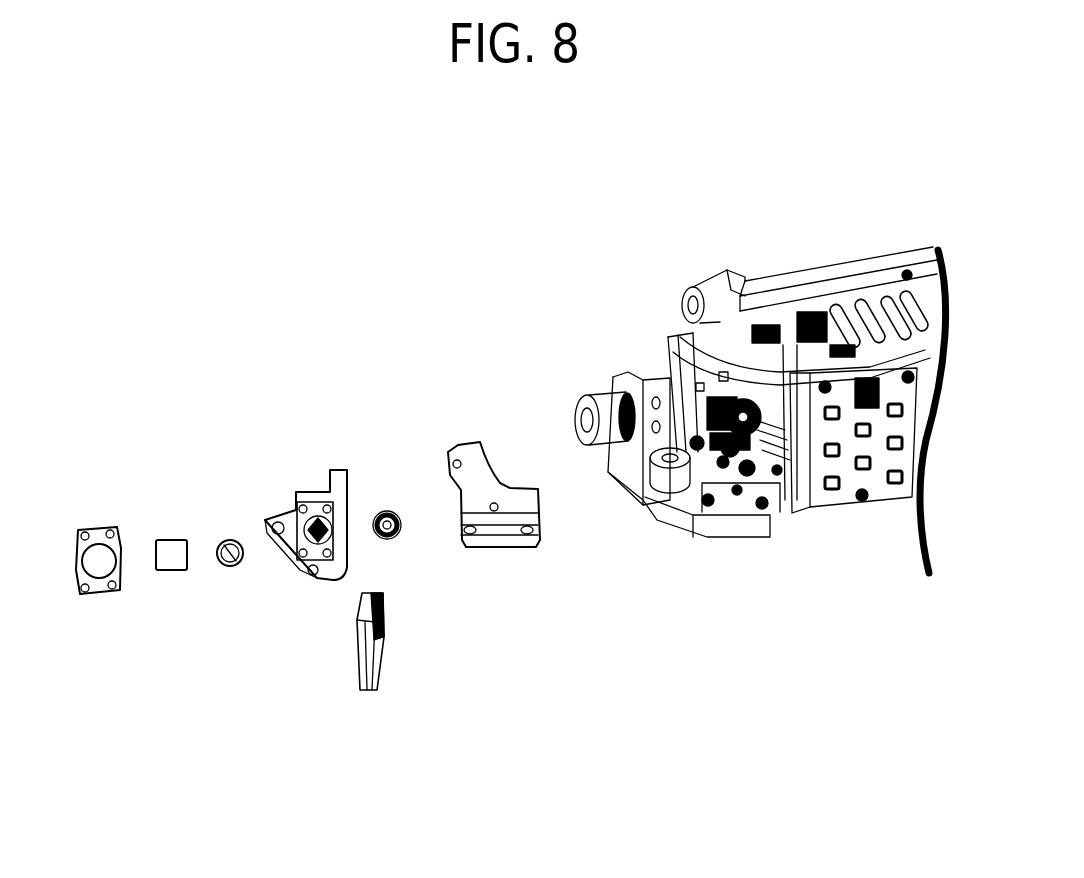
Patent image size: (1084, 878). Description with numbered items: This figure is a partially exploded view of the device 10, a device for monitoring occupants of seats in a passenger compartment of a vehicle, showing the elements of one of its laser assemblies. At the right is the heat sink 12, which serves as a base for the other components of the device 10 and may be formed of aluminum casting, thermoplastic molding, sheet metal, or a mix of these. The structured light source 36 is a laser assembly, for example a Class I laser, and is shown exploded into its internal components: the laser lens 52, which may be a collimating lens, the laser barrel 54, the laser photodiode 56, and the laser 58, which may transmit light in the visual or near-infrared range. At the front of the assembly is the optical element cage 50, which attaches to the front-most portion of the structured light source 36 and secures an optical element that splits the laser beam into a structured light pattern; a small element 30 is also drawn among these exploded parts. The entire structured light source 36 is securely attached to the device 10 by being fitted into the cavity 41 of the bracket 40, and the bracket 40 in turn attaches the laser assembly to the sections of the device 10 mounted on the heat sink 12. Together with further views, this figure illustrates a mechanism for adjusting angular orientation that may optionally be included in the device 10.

The device 10 is at (83, 243).
The heat sink 12 is at (798, 552).
The spacer 30 is at (173, 553).
The structured light source 36 is at (42, 483).
The bracket 40 is at (497, 530).
The cavity 41 is at (515, 470).
The optical element cage 50 is at (98, 560).
The laser lens 52 is at (230, 550).
The laser barrel 54 is at (312, 578).
The laser photodiode 56 is at (377, 680).
The laser 58 is at (402, 535).